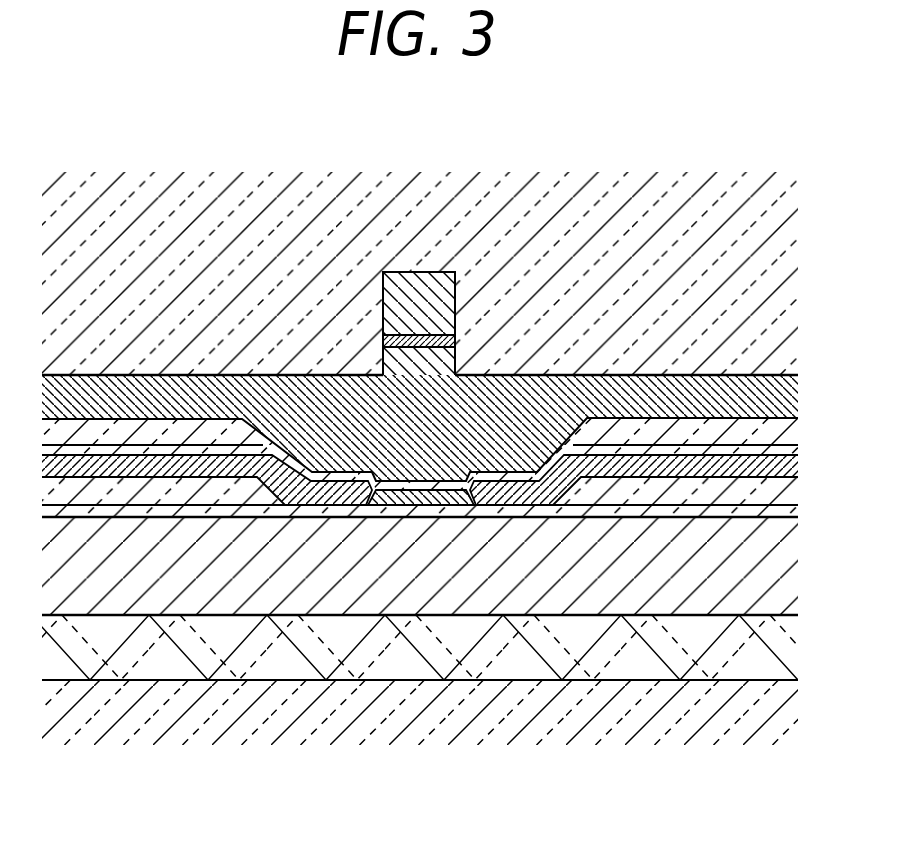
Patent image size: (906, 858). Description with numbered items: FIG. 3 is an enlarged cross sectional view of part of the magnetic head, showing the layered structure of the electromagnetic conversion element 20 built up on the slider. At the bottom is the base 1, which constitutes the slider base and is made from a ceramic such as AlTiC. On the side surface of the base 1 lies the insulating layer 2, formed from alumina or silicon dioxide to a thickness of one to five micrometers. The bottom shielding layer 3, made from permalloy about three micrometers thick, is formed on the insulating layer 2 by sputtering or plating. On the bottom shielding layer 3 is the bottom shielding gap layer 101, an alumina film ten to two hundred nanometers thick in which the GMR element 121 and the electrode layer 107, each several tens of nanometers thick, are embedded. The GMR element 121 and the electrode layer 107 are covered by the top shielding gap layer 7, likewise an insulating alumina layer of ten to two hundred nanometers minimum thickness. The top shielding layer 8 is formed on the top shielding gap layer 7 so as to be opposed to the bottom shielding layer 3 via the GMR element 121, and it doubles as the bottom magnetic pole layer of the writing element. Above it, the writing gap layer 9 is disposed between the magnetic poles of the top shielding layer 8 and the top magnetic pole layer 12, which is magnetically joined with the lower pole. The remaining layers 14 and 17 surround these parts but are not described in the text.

The base 1 is at (80, 713).
The insulating layer 2 is at (140, 660).
The bottom shielding layer 3 is at (350, 578).
The top shielding gap layer 7 is at (170, 432).
The top shielding layer 8 is at (262, 407).
The writing gap layer 9 is at (397, 338).
The top magnetic pole layer 12 is at (435, 300).
The cap layer 14 is at (585, 335).
The interlayer insulating film 17 is at (513, 223).
The electromagnetic conversion element 20 is at (438, 453).
The bottom shielding gap layer 101 is at (250, 490).
The electrode layer 107 is at (200, 465).
The GMR element 121 is at (432, 492).